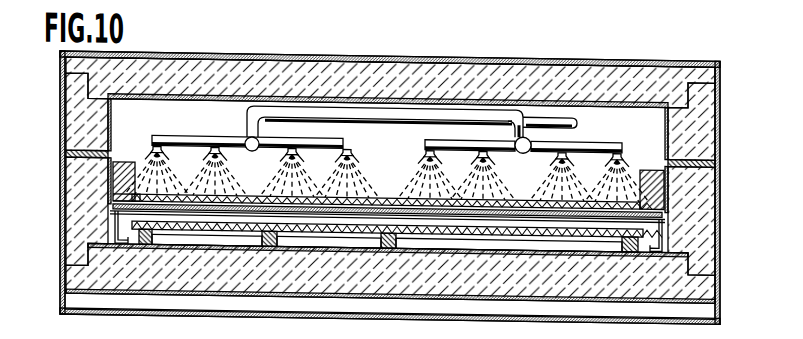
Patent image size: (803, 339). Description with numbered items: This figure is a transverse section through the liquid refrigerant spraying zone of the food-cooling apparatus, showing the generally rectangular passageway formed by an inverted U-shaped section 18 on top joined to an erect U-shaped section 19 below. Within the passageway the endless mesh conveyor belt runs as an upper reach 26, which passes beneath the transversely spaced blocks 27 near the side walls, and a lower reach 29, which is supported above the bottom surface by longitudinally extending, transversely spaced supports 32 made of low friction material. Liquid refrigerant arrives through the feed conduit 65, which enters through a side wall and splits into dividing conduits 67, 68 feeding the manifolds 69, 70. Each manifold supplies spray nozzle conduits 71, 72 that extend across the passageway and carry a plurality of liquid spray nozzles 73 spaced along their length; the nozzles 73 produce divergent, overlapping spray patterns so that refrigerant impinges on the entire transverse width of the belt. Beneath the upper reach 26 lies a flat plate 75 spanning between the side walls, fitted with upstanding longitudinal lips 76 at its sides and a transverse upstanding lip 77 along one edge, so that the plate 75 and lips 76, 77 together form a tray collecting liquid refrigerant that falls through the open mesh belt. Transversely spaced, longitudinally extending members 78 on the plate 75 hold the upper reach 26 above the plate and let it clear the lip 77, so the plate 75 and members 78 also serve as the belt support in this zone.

The inverted U-shaped section 18 is at (500, 54).
The erect U-shaped section 19 is at (215, 293).
The upper reach 26 is at (392, 190).
The blocks 27 is at (124, 161).
The lower reach 29 is at (650, 161).
The supports 32 is at (143, 243).
The liquid refrigerant feed conduit 65 is at (563, 110).
The dividing conduit 67 is at (516, 106).
The dividing conduit 68 is at (287, 104).
The manifold 69 is at (515, 137).
The manifold 70 is at (246, 137).
The spray nozzle conduits 71 is at (587, 134).
The spray nozzle conduits 72 is at (185, 134).
The liquid spray nozzles 73 is at (156, 145).
The flat plate 75 is at (652, 208).
The longitudinal lips 76 is at (112, 201).
The transverse upstanding lip 77 is at (130, 205).
The members 78 is at (275, 192).